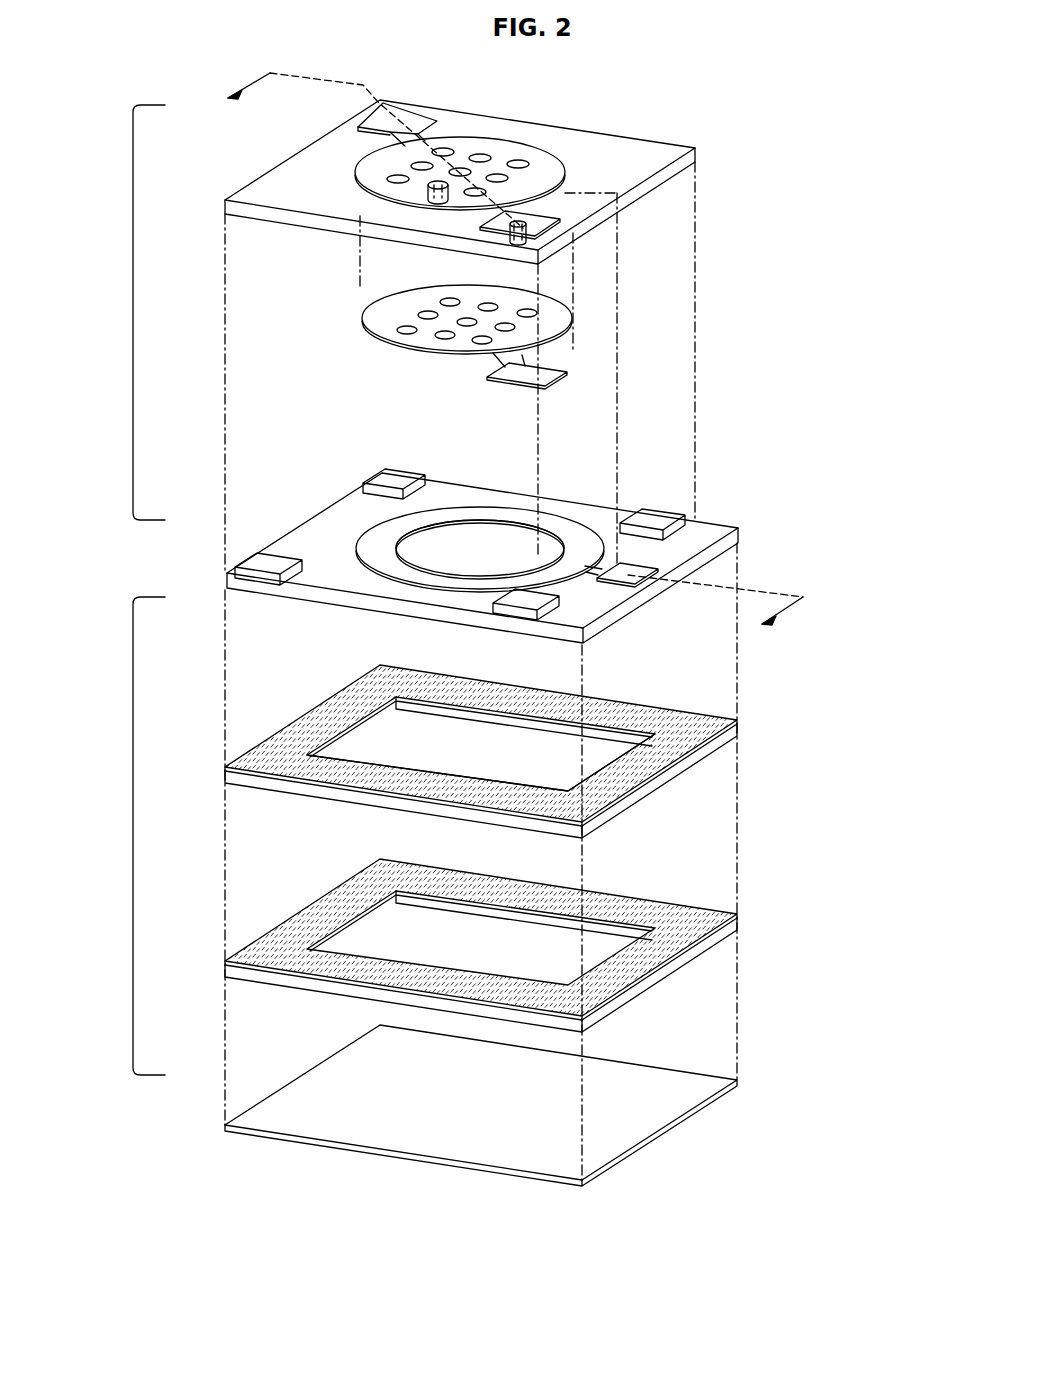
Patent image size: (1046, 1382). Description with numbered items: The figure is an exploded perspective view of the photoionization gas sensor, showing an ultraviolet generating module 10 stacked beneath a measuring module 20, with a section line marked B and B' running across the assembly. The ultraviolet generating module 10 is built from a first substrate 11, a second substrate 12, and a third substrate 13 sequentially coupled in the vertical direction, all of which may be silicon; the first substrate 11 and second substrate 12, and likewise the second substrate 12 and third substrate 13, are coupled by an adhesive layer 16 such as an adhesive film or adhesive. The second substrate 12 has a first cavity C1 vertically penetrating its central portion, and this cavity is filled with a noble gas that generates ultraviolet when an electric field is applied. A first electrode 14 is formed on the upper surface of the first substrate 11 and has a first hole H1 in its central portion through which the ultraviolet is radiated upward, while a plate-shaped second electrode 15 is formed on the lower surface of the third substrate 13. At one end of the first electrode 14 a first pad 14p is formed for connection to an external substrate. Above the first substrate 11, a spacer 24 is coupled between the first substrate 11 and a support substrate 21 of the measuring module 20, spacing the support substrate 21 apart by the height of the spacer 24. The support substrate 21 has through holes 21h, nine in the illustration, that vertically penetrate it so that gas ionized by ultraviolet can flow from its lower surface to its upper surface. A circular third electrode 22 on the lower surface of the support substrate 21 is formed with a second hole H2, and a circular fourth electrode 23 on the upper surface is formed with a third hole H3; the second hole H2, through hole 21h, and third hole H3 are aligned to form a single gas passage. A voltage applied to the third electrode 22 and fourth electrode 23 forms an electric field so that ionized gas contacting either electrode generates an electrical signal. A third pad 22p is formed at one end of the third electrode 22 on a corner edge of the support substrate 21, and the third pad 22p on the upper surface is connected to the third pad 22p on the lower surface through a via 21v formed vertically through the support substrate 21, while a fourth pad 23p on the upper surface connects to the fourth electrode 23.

The ultraviolet generating module 10 is at (133, 830).
The first substrate 11 is at (226, 586).
The second substrate 12 is at (226, 774).
The third substrate 13 is at (226, 968).
The first electrode 14 is at (388, 567).
The first pad 14p is at (628, 566).
The second electrode 15 is at (270, 1115).
The adhesive layer 16 is at (272, 750).
The measuring module 20 is at (133, 340).
The support substrate 21 is at (225, 207).
The through hole 21h is at (438, 183).
The via 21v is at (522, 227).
The third electrode 22 is at (378, 312).
The third pad 22p is at (522, 212).
The fourth electrode 23 is at (383, 162).
The fourth pad 23p is at (381, 116).
The spacer 24 is at (266, 560).
The first hole H1 is at (482, 541).
The second hole H2 is at (445, 336).
The third hole H3 is at (398, 179).
The first cavity C1 is at (468, 738).
The section line B is at (375, 146).
The section line B' is at (715, 611).